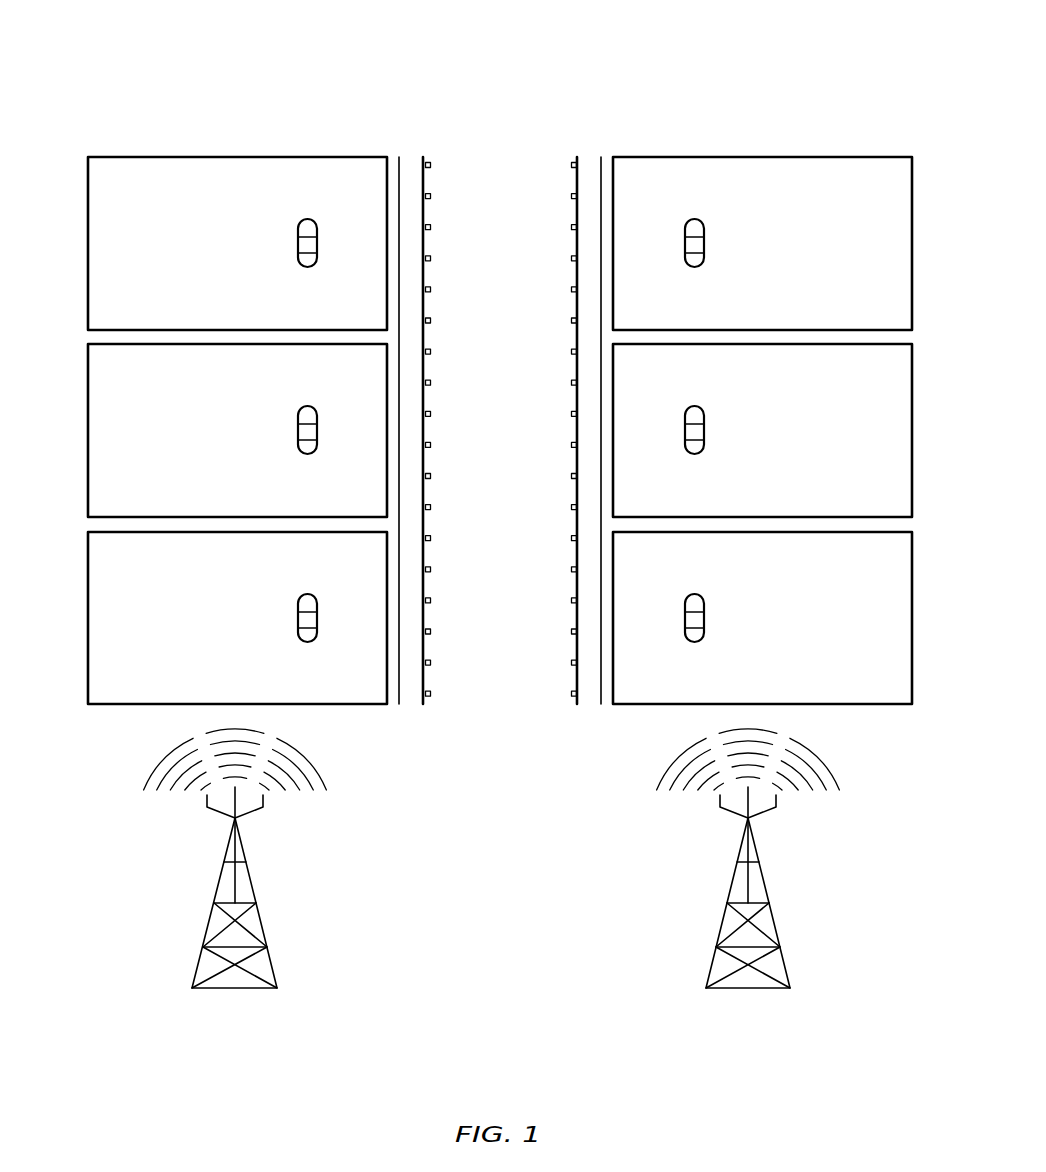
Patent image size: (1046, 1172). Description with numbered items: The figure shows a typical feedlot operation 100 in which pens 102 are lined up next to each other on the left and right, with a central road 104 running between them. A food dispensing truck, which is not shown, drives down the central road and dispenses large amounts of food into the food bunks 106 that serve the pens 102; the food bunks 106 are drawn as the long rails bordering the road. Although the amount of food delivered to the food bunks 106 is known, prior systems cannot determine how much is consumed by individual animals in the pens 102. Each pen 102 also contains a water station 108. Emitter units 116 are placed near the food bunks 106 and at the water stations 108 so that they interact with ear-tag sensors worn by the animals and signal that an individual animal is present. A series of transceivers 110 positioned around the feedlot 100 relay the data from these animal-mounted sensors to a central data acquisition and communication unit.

The feedlot operation 100 is at (367, 68).
The pen 102 is at (88, 288).
The central corridor 104 is at (521, 523).
The food bunk 106 is at (410, 692).
The water station 108 is at (297, 257).
The transceiver 110 is at (262, 921).
The emitter unit 116 is at (298, 243).